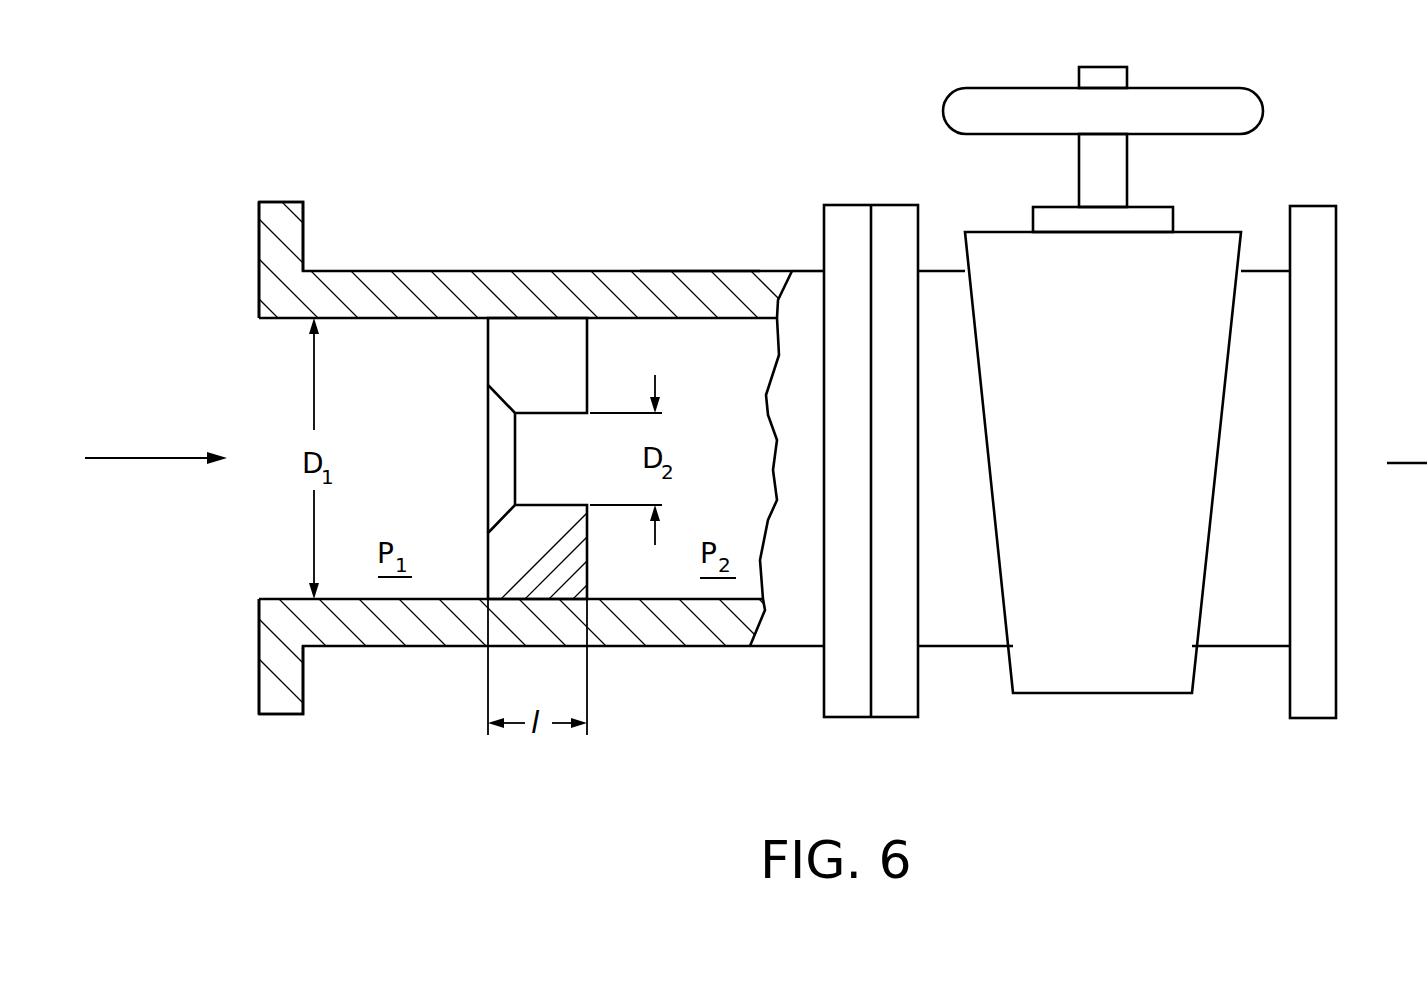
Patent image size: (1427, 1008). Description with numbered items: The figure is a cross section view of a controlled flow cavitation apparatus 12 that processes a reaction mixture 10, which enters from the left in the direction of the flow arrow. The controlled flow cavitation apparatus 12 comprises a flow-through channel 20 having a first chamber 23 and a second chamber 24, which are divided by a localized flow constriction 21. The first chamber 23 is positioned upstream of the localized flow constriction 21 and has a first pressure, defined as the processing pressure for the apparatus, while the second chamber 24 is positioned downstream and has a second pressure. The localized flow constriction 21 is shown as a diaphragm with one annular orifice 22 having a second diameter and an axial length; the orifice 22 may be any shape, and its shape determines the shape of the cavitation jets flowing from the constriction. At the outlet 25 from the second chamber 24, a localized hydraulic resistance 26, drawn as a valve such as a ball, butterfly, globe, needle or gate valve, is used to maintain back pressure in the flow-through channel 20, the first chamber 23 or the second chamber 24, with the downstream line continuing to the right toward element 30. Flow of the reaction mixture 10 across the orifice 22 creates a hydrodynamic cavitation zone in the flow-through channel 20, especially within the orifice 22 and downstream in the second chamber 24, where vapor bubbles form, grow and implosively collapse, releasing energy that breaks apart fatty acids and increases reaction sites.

The reaction mixture 10 is at (118, 460).
The controlled flow cavitation apparatus 12 is at (356, 700).
The flow-through channel 20 is at (600, 283).
The localized flow constriction 21 is at (520, 356).
The orifice 22 is at (533, 462).
The first chamber 23 is at (293, 355).
The second chamber 24 is at (676, 340).
The outlet 25 is at (850, 395).
The localized hydraulic resistance 26 is at (1096, 676).
The outlet 30 is at (1412, 460).